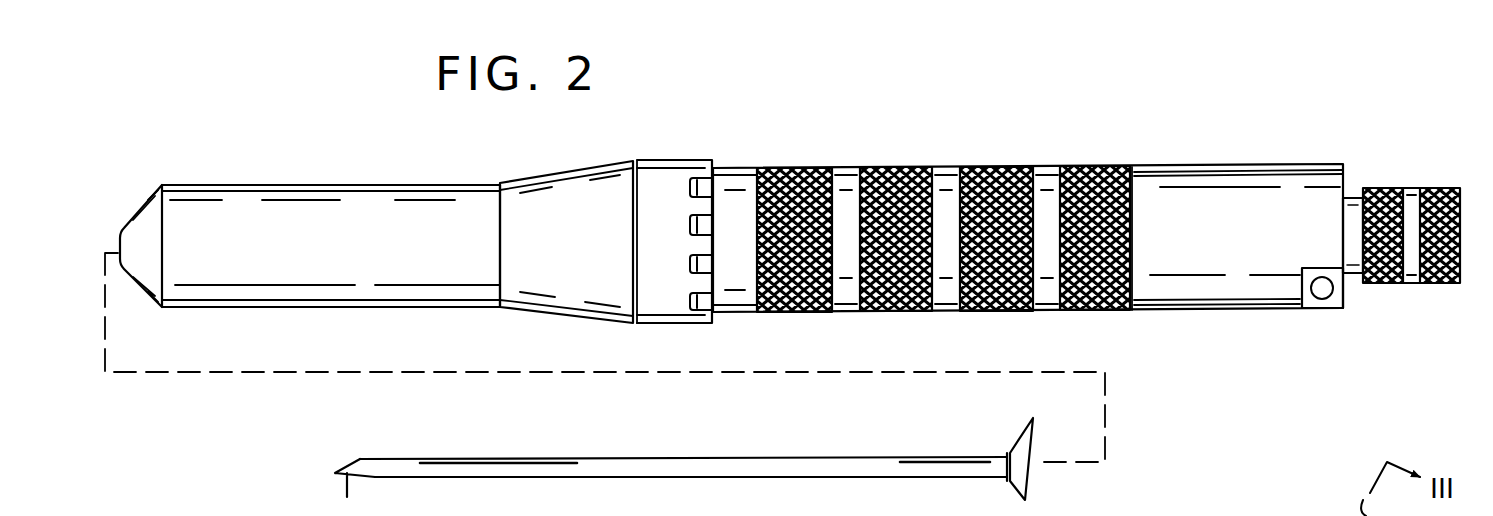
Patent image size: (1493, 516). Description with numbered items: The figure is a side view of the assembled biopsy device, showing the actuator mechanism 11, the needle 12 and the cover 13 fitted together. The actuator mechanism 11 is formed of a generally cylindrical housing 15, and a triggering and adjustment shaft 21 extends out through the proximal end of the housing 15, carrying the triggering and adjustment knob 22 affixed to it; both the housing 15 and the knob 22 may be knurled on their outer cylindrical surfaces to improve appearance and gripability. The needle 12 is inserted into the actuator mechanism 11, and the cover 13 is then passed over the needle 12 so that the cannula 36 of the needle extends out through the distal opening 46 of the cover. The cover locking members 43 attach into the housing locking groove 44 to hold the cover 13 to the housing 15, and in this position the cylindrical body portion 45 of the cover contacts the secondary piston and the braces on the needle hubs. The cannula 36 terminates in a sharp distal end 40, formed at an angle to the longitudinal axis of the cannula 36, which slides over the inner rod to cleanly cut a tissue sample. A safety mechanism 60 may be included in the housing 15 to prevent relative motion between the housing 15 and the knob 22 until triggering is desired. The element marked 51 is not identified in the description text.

The actuator mechanism 11 is at (1138, 147).
The needle 12 is at (855, 445).
The cover 13 is at (442, 170).
The housing 15 is at (1243, 205).
The triggering and adjustment shaft 21 is at (1352, 217).
The triggering and adjustment knob 22 is at (1438, 195).
The cannula 36 is at (613, 467).
The sharp distal end 40 is at (358, 462).
The cover locking members 43 is at (703, 172).
The housing locking groove 44 is at (718, 186).
The cylindrical body portion 45 is at (241, 215).
The distal opening 46 is at (117, 243).
The latch 51 is at (1363, 500).
The safety mechanism 60 is at (1322, 292).